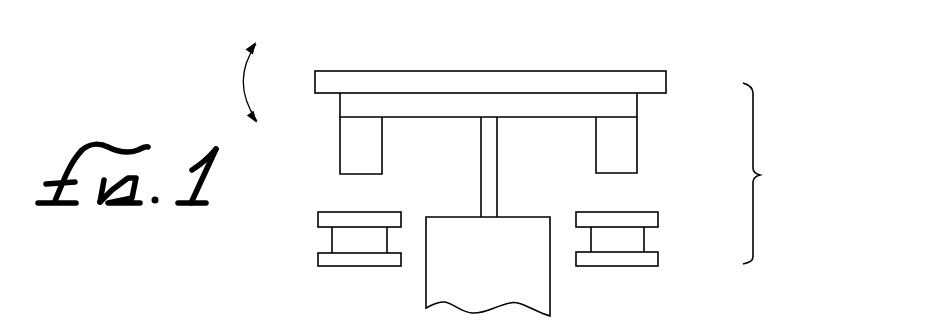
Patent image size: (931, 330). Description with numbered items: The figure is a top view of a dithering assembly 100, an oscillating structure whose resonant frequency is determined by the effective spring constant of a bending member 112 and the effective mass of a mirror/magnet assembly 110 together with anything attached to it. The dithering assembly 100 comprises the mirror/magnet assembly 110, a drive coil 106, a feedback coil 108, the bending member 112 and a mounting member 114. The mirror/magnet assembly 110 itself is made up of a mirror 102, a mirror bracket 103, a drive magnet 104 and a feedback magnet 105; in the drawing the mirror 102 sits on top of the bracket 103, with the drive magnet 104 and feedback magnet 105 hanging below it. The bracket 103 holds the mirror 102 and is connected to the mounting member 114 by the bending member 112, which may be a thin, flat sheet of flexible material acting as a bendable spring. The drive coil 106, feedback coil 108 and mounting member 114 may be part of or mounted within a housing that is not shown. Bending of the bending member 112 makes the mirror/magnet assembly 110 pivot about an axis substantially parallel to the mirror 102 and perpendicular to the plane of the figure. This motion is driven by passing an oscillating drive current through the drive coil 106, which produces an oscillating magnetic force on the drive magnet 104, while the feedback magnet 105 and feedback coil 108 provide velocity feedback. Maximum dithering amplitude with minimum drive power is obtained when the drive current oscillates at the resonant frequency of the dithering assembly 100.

The dithering assembly 100 is at (536, 37).
The mirror 102 is at (570, 71).
The mirror bracket 103 is at (637, 105).
The drive magnet 104 is at (637, 152).
The feedback magnet 105 is at (340, 152).
The drive coil 106 is at (644, 234).
The feedback coil 108 is at (332, 235).
The mirror/magnet assembly 110 is at (776, 173).
The bending member 112 is at (481, 165).
The mounting member 114 is at (550, 290).